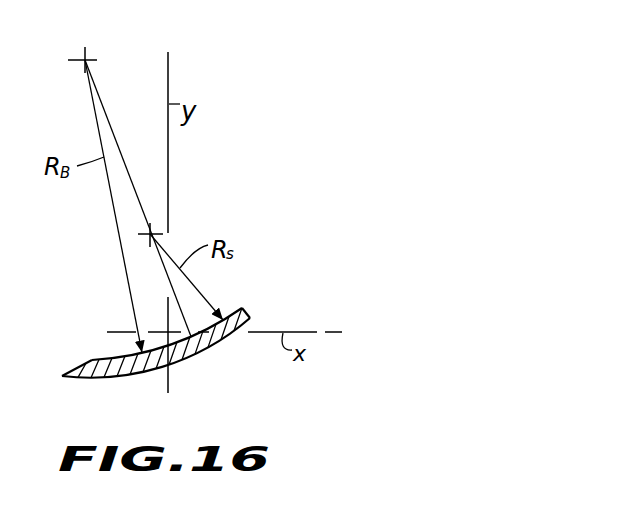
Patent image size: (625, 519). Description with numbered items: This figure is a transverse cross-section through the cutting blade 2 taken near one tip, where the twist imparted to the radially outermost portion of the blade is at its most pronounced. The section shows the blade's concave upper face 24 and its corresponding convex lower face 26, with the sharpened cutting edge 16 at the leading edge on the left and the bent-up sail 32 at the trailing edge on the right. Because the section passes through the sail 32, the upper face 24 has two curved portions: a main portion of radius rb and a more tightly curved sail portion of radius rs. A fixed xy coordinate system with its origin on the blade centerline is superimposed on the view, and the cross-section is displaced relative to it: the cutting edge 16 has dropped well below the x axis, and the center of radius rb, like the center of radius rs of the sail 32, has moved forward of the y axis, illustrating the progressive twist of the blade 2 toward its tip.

The cutting blade 2 is at (91, 307).
The cutting edge 16 is at (78, 369).
The upper face 24 is at (108, 360).
The lower face 26 is at (110, 378).
The sail 32 is at (240, 308).